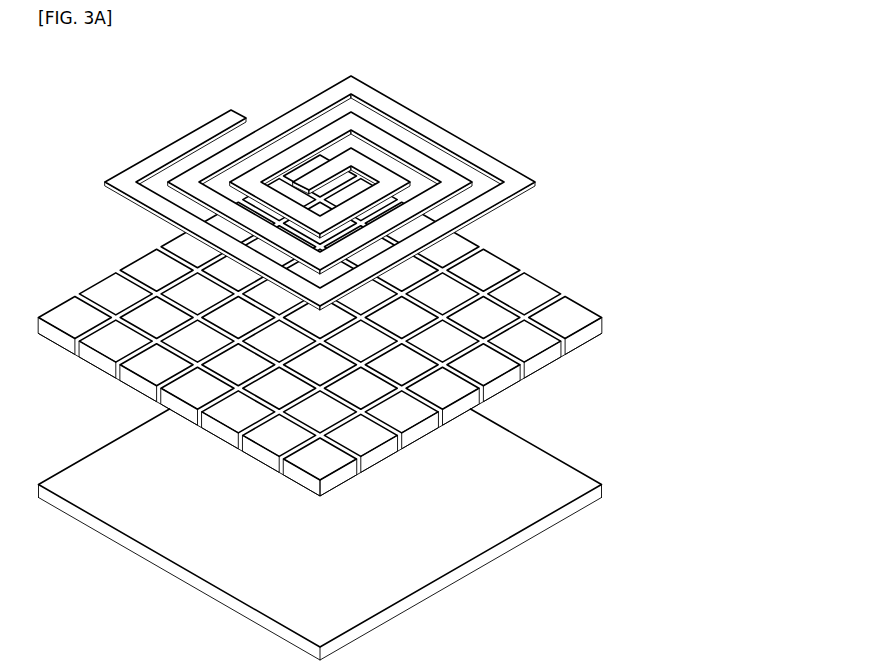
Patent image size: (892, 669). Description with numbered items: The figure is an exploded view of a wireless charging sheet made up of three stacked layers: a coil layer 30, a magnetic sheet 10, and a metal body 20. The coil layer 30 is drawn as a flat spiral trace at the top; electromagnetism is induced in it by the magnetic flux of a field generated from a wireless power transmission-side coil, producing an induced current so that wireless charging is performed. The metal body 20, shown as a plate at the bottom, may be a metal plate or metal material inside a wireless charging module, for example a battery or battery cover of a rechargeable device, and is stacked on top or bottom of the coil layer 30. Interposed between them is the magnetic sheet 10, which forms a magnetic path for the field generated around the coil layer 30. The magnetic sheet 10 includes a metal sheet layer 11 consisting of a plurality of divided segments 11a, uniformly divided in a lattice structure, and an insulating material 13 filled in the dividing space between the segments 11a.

The magnetic sheet 10 is at (384, 325).
The metal sheet layer 11 is at (362, 325).
The segment 11a is at (537, 288).
The insulating material 13 is at (443, 318).
The metal body 20 is at (550, 475).
The coil layer 30 is at (463, 147).